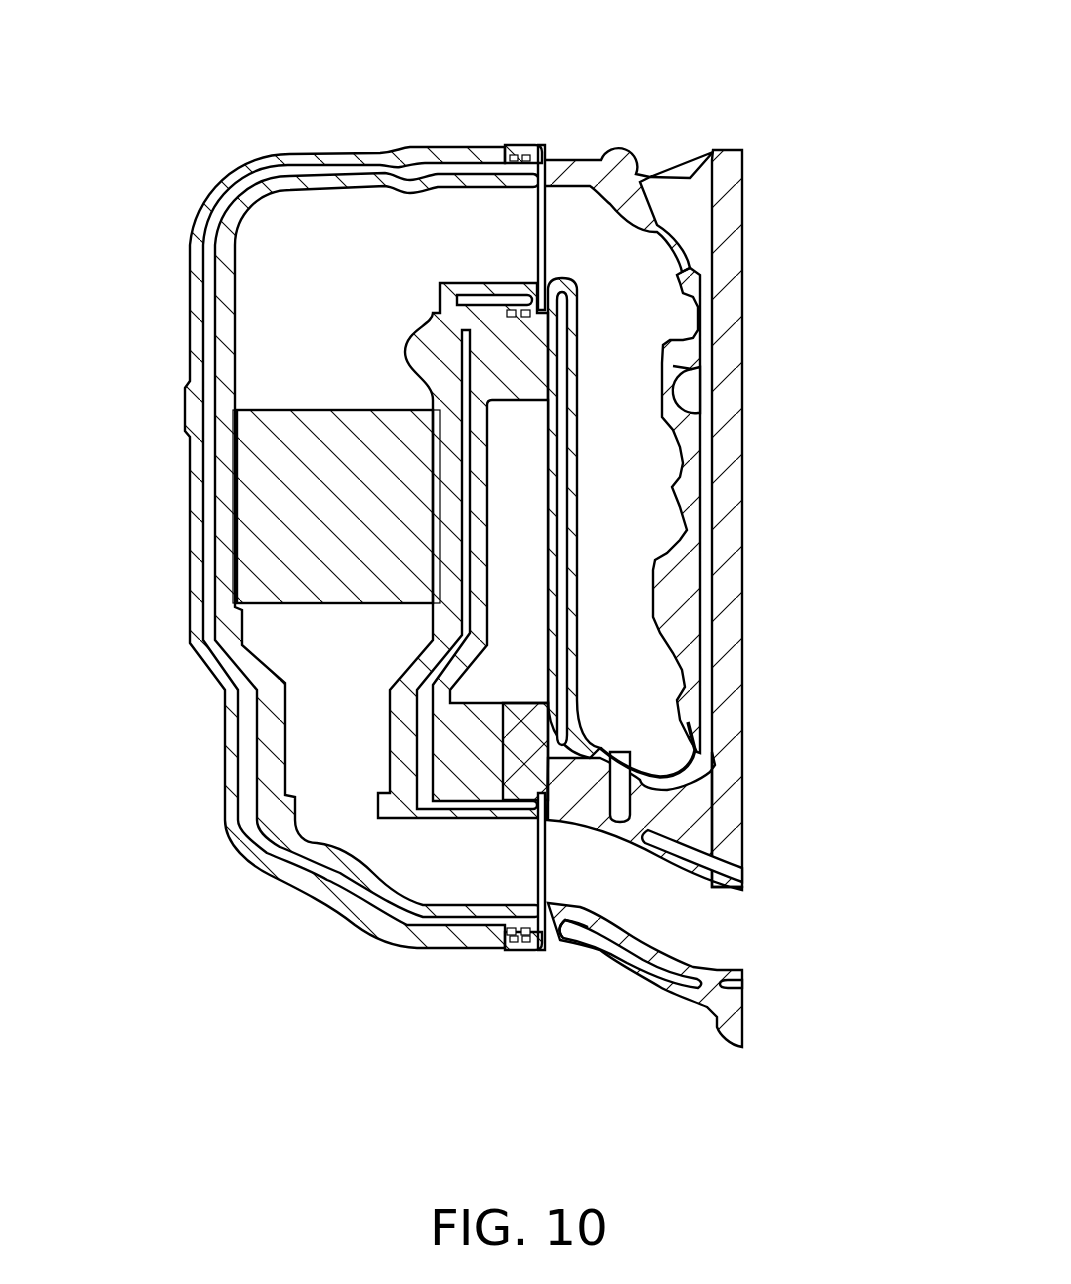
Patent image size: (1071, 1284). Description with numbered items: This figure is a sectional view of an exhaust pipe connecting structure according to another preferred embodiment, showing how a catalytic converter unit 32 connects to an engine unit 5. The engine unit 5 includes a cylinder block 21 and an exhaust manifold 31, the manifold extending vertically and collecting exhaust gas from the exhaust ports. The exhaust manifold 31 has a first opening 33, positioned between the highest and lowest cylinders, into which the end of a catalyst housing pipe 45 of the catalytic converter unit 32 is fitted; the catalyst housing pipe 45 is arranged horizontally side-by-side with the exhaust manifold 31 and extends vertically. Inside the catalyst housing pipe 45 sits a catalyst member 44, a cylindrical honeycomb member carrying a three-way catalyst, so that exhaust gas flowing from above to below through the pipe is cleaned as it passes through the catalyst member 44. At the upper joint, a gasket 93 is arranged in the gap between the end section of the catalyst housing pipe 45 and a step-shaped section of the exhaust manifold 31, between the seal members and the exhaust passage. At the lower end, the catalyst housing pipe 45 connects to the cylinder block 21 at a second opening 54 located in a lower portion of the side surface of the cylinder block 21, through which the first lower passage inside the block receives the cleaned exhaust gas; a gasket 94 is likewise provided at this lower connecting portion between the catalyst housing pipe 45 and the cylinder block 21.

The engine unit 5 is at (676, 121).
The cylinder block 21 is at (613, 950).
The exhaust manifold 31 is at (608, 148).
The catalytic converter unit 32 is at (176, 332).
The first opening 33 is at (534, 234).
The catalyst member 44 is at (283, 516).
The catalyst housing pipe 45 is at (237, 170).
The second opening 54 is at (535, 865).
The gasket 93 is at (563, 158).
The lower retaining portion 94 is at (560, 938).